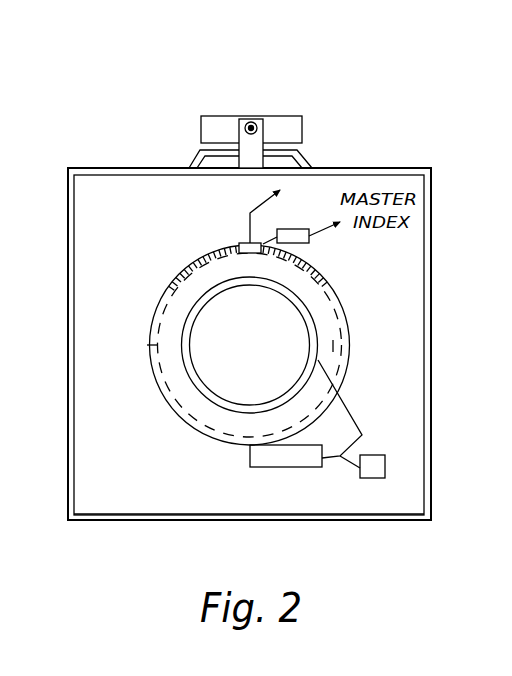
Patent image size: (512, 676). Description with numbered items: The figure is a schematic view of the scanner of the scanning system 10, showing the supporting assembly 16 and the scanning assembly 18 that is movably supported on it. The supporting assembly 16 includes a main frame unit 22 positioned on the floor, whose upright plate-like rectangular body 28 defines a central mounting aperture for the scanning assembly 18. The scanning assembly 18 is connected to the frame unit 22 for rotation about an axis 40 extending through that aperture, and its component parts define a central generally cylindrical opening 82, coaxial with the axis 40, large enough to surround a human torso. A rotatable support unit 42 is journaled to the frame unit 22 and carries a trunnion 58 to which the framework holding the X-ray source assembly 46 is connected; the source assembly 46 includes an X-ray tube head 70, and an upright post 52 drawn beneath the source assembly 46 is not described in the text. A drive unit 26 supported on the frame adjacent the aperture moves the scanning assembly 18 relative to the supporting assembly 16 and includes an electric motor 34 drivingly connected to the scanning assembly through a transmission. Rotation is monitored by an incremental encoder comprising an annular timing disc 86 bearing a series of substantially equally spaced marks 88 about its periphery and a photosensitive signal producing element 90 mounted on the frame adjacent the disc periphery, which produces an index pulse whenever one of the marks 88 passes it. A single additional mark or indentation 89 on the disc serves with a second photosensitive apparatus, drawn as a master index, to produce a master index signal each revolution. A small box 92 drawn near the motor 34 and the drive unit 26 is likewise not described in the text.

The scanning system 10 is at (186, 70).
The supporting assembly 16 is at (62, 173).
The main frame unit 22 is at (66, 300).
The upright plate-like rectangular body 28 is at (144, 451).
The X-ray tube head 70 is at (218, 128).
The X-ray source assembly 46 is at (306, 115).
The post 52 is at (255, 148).
The trunnion 58 is at (257, 106).
The annular timing disc 86 is at (344, 315).
The scanning assembly 18 is at (326, 277).
The marks 88 is at (195, 262).
The mark or indentation 89 is at (151, 340).
The rotatable support unit 42 is at (330, 348).
The photosensitive signal producing element 90 is at (243, 243).
The central cylindrical opening 82 is at (190, 332).
The axis 40 is at (246, 346).
The electric motor 34 is at (253, 470).
The drive unit 26 is at (312, 474).
The control unit 92 is at (371, 478).